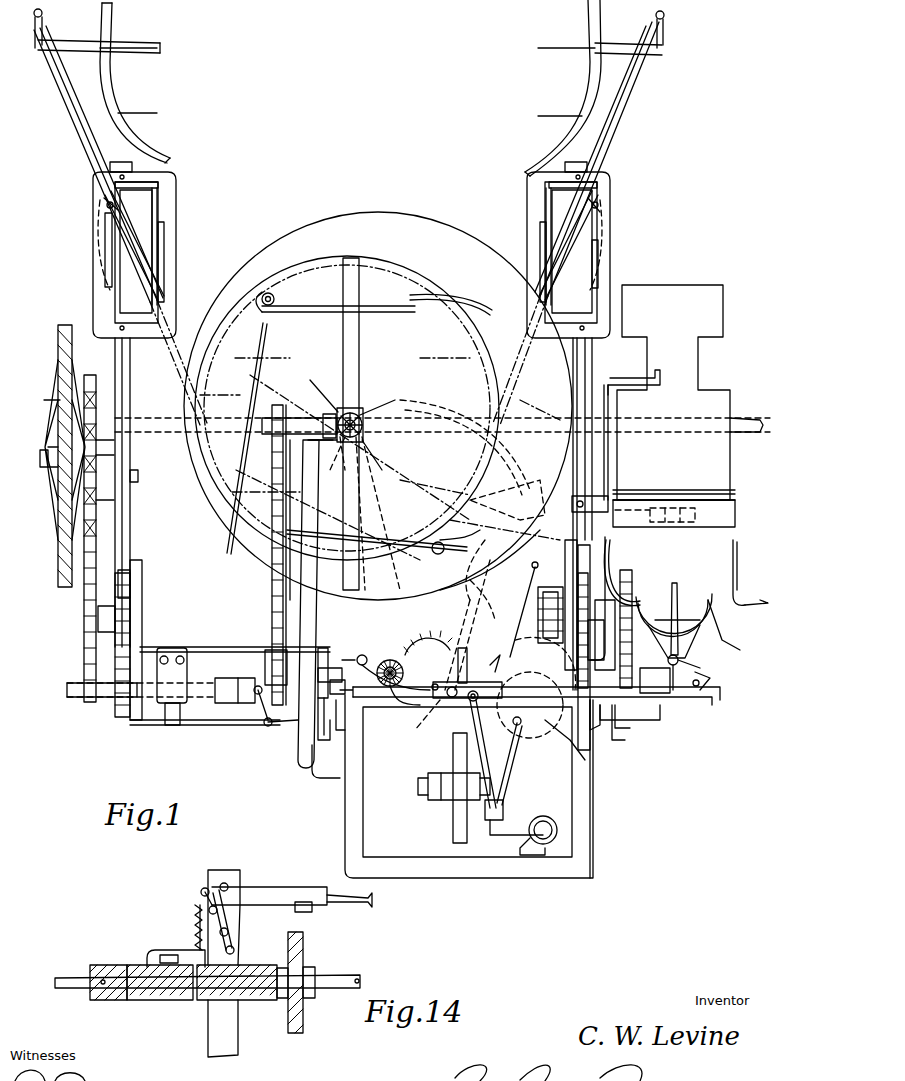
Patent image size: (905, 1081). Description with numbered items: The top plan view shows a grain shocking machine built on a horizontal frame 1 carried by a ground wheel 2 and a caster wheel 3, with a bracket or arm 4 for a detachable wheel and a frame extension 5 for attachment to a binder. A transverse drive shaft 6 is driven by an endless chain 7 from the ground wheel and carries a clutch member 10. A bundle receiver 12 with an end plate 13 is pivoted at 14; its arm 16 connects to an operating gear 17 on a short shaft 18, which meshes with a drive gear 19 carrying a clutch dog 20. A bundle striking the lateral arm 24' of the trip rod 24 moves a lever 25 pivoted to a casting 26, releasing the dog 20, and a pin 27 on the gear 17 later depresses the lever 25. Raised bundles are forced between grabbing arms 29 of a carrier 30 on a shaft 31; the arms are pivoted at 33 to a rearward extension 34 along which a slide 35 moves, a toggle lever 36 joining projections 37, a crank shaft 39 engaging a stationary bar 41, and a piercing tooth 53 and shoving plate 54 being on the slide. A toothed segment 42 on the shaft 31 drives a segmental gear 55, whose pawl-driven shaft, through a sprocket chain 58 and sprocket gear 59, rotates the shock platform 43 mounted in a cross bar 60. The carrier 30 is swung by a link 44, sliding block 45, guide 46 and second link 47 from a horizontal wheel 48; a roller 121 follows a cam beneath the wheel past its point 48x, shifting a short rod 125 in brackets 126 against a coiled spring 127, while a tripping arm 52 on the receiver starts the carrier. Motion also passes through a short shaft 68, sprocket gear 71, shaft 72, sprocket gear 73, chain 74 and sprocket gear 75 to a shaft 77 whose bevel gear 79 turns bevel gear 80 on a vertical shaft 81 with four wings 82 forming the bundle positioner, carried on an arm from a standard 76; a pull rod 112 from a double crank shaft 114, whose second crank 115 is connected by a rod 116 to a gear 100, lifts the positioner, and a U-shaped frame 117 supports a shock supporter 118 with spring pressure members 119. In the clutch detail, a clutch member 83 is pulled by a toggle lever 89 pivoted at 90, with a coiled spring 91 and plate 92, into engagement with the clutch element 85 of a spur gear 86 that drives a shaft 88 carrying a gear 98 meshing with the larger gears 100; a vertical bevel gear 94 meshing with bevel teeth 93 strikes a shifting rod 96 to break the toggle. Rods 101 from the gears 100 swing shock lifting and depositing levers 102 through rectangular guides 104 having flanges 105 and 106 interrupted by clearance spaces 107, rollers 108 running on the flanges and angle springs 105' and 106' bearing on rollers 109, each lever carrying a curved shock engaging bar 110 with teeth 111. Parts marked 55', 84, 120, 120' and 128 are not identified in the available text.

In FIG. 1, the horizontal frame 1 is at (133, 556).
In FIG. 1, the ground wheel 2 is at (60, 355).
In FIG. 1, the caster wheel 3 is at (453, 830).
In FIG. 1, the horizontal bracket or arm 4 is at (738, 418).
In FIG. 1, the frame extension 5 is at (345, 812).
In FIG. 1, the transverse drive shaft 6 is at (198, 680).
In FIG. 1, the endless chain 7 is at (60, 592).
In FIG. 1, the clutch member 10 is at (588, 755).
In FIG. 1, the bundle receiver 12 is at (705, 285).
In FIG. 1, the end plate 13 is at (690, 490).
In FIG. 1, the pivot 14 is at (675, 527).
In FIG. 1, the arm 16 is at (615, 565).
In FIG. 1, the operating gear 17 is at (630, 590).
In FIG. 1, the short shaft 18 is at (596, 630).
In FIG. 1, the drive gear 19 is at (632, 681).
In FIG. 1, the clutch dog 20 is at (572, 722).
In FIG. 1, the trip rod 24 is at (626, 442).
In FIG. 1, the lateral arm 24' is at (640, 420).
In FIG. 1, the lever 25 is at (566, 545).
In FIG. 1, the casting 26 is at (589, 647).
In FIG. 1, the pin 27 is at (635, 580).
In FIG. 1, the grabbing arms 29 is at (740, 572).
In FIG. 1, the carrier 30 is at (565, 740).
In FIG. 1, the shaft 31 is at (452, 698).
In FIG. 1, the pivotal fastening 33 is at (700, 660).
In FIG. 1, the rearward extension 34 is at (716, 700).
In FIG. 1, the slide 35 is at (680, 623).
In FIG. 1, the toggle lever 36 is at (716, 680).
In FIG. 1, the short projections 37 is at (700, 690).
In FIG. 1, the short crank shaft 39 is at (636, 724).
In FIG. 1, the stationary horizontal bar 41 is at (510, 650).
In FIG. 1, the toothed segment 42 is at (462, 648).
In FIG. 1, the shock supporting platform 43 is at (413, 230).
In FIG. 1, the link 44 is at (473, 701).
In FIG. 1, the sliding block 45 is at (505, 808).
In FIG. 1, the horizontal guide 46 is at (500, 735).
In FIG. 1, the second link 47 is at (510, 760).
In FIG. 1, the horizontal wheel 48 is at (528, 661).
In FIG. 1, the cam point 48x is at (500, 748).
In FIG. 1, the tripping arm 52 is at (530, 512).
In FIG. 1, the bundle piercing tooth 53 is at (678, 605).
In FIG. 1, the shoving plate 54 is at (760, 610).
In FIG. 1, the segmental gear 55 is at (428, 641).
In FIG. 1, the arm 55' is at (726, 626).
In FIG. 1, the sprocket chain 58 is at (423, 622).
In FIG. 1, the sprocket gear 59 is at (358, 400).
In FIG. 1, the cross bar 60 is at (138, 425).
In FIG. 1, the short horizontal shaft 68 is at (348, 717).
In FIG. 1, the second sprocket gear 71 is at (320, 640).
In FIG. 1, the horizontal shaft 72 is at (268, 655).
In FIG. 1, the sprocket gear 73 is at (272, 583).
In FIG. 1, the horizontal sprocket chain 74 is at (272, 575).
In FIG. 1, the sprocket gear 75 is at (290, 418).
In FIG. 14, the vertical standard 76 is at (215, 1030).
In FIG. 1, the shaft 77 is at (262, 405).
In FIG. 1, the bevel gear 79 is at (340, 452).
In FIG. 1, the bevel gear 80 is at (382, 396).
In FIG. 1, the vertical shaft 81 is at (355, 410).
In FIG. 1, the wings 82 is at (338, 412).
In FIG. 1, the clutch member 83 is at (322, 648).
In FIG. 14, the clutch member 83 is at (250, 1000).
In FIG. 14, the sleeve 84 is at (103, 1000).
In FIG. 1, the toothed clutch element 85 is at (338, 680).
In FIG. 14, the toothed clutch element 85 is at (282, 1000).
In FIG. 1, the spur gear 86 is at (328, 719).
In FIG. 14, the spur gear 86 is at (300, 1020).
In FIG. 14, the shaft 88 is at (340, 975).
In FIG. 14, the toggle lever 89 is at (193, 912).
In FIG. 14, the pivot 90 is at (235, 932).
In FIG. 14, the coiled spring 91 is at (198, 895).
In FIG. 14, the plate 92 is at (165, 948).
In FIG. 1, the bevel gear teeth 93 is at (405, 673).
In FIG. 1, the vertical bevel gear 94 is at (419, 721).
In FIG. 14, the shifting rod 96 is at (262, 890).
In FIG. 1, the gear 98 is at (122, 720).
In FIG. 1, the larger gears 100 is at (132, 575).
In FIG. 1, the rods 101 is at (128, 356).
In FIG. 1, the shock lifting and depositing levers 102 is at (82, 150).
In FIG. 1, the rectangular guides 104 is at (170, 212).
In FIG. 1, the outer longitudinal flange 105 is at (354, 250).
In FIG. 1, the angle shaped spring 105' is at (408, 262).
In FIG. 1, the guide flange 106 is at (351, 244).
In FIG. 1, the angle shaped spring 106' is at (350, 245).
In FIG. 1, the clearance spaces 107 is at (178, 178).
In FIG. 1, the rollers 108 is at (100, 210).
In FIG. 1, the rollers 109 is at (604, 226).
In FIG. 1, the shock engaging device 110 is at (585, 90).
In FIG. 1, the off-standing teeth 111 is at (128, 52).
In FIG. 1, the pull rod 112 is at (328, 757).
In FIG. 1, the double crank shaft 114 is at (225, 726).
In FIG. 1, the second crank 115 is at (165, 725).
In FIG. 1, the rod 116 is at (72, 42).
In FIG. 1, the pendant U-shaped frame 117 is at (360, 290).
In FIG. 1, the shock supporter 118 is at (285, 265).
In FIG. 1, the spring pressure members 119 is at (312, 308).
In FIG. 1, the pivot 120 is at (276, 744).
In FIG. 1, the pivot 120' is at (248, 683).
In FIG. 1, the roller 121 is at (548, 815).
In FIG. 1, the short rod 125 is at (470, 545).
In FIG. 1, the brackets 126 is at (548, 585).
In FIG. 1, the coiled spring 127 is at (478, 593).
In FIG. 1, the link 128 is at (397, 694).